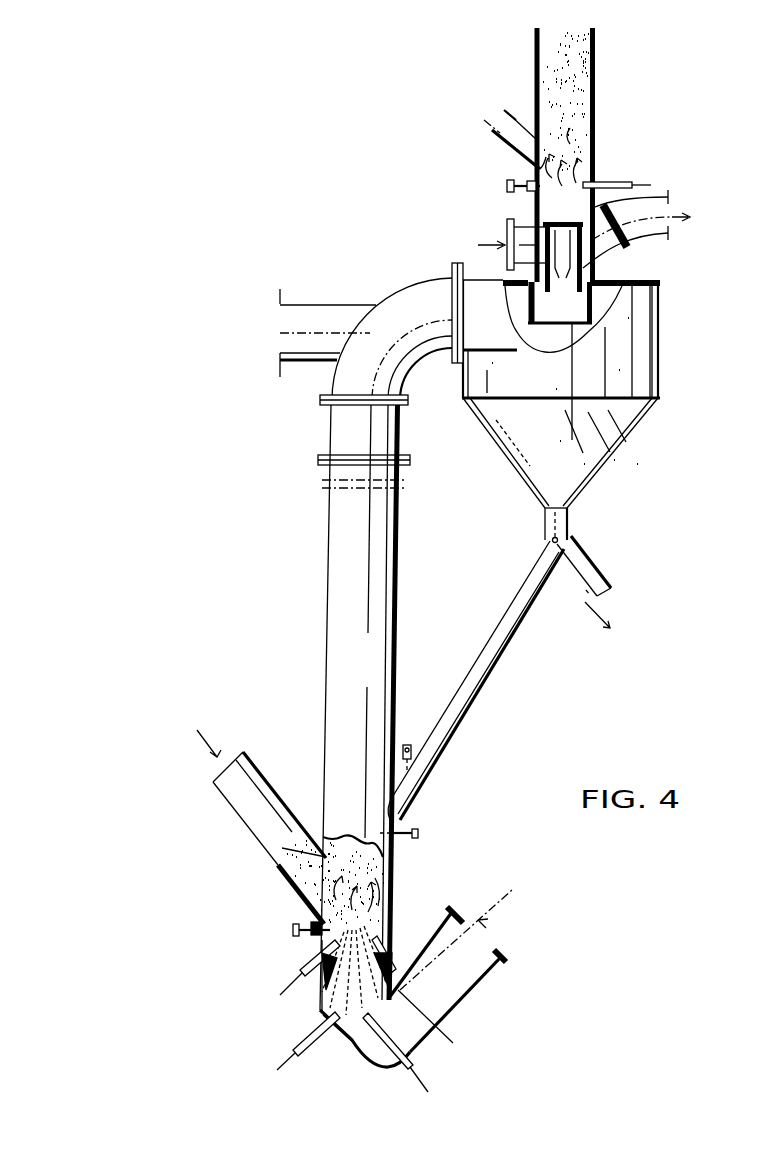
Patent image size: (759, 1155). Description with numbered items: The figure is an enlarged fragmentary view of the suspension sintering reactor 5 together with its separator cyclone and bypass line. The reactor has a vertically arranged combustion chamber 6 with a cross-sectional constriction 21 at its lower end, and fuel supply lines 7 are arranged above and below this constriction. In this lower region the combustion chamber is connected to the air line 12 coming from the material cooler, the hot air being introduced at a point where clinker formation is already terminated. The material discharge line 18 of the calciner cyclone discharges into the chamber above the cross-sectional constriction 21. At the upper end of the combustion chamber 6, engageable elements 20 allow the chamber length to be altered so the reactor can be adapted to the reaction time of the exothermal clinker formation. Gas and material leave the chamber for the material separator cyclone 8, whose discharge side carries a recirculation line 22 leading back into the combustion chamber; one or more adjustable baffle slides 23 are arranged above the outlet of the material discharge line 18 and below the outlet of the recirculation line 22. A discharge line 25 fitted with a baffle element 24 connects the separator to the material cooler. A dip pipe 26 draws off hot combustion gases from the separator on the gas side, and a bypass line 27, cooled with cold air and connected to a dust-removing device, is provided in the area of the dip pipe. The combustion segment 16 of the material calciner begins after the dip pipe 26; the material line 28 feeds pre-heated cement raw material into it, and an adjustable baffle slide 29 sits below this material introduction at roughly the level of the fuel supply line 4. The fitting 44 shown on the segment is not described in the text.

The fuel supply line 4 is at (620, 182).
The suspension sintering reactor 5 is at (337, 555).
The combustion chamber 6 is at (370, 675).
The fuel supply lines 7 is at (283, 1050).
The material separator cyclone 8 is at (647, 335).
The air line 12 is at (312, 316).
The combustion segment 16 is at (585, 44).
The material discharge line 18 is at (253, 815).
The engageable elements 20 is at (347, 430).
The cross-sectional constriction 21 is at (322, 1010).
The recirculation line 22 is at (497, 632).
The baffle slides 23 is at (405, 835).
The baffle element 24 is at (553, 522).
The discharge line 25 is at (575, 558).
The dip pipe 26 is at (588, 278).
The bypass line 27 is at (672, 202).
The material line 28 is at (509, 144).
The adjustable baffle slide 29 is at (520, 187).
The gas inlet pipe 44 is at (527, 238).